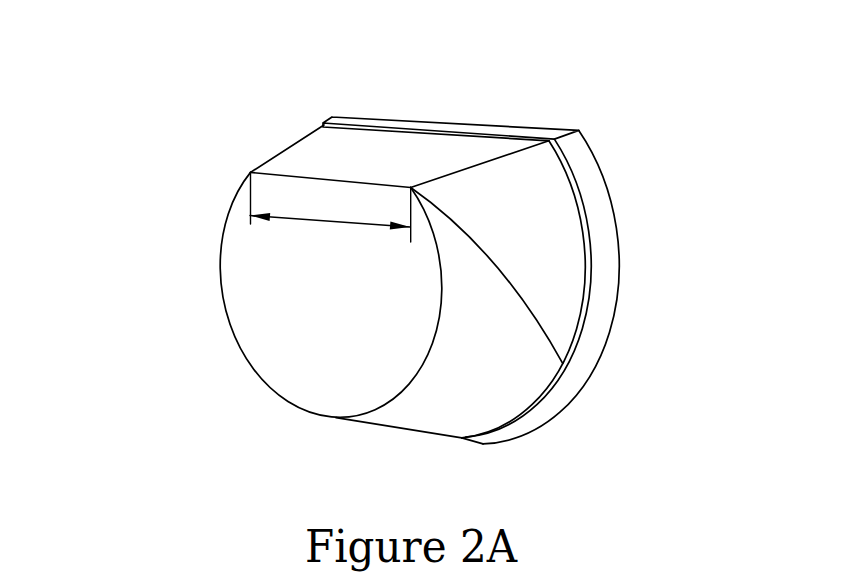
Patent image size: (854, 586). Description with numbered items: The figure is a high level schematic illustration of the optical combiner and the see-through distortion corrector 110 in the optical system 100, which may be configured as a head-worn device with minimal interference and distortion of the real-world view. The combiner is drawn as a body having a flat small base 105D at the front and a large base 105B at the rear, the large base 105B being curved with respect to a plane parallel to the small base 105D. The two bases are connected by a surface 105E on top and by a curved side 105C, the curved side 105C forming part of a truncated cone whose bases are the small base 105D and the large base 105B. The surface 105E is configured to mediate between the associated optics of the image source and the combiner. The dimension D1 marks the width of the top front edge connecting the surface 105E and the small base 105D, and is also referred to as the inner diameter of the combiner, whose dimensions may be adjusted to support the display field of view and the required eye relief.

The optical system 100 is at (72, 31).
The large base 105B is at (588, 316).
The curved side 105C is at (533, 375).
The flat small base 105D is at (267, 307).
The surface 105E is at (323, 123).
The see-through distortion corrector 110 is at (615, 218).
The width of top front edge D1 is at (330, 214).